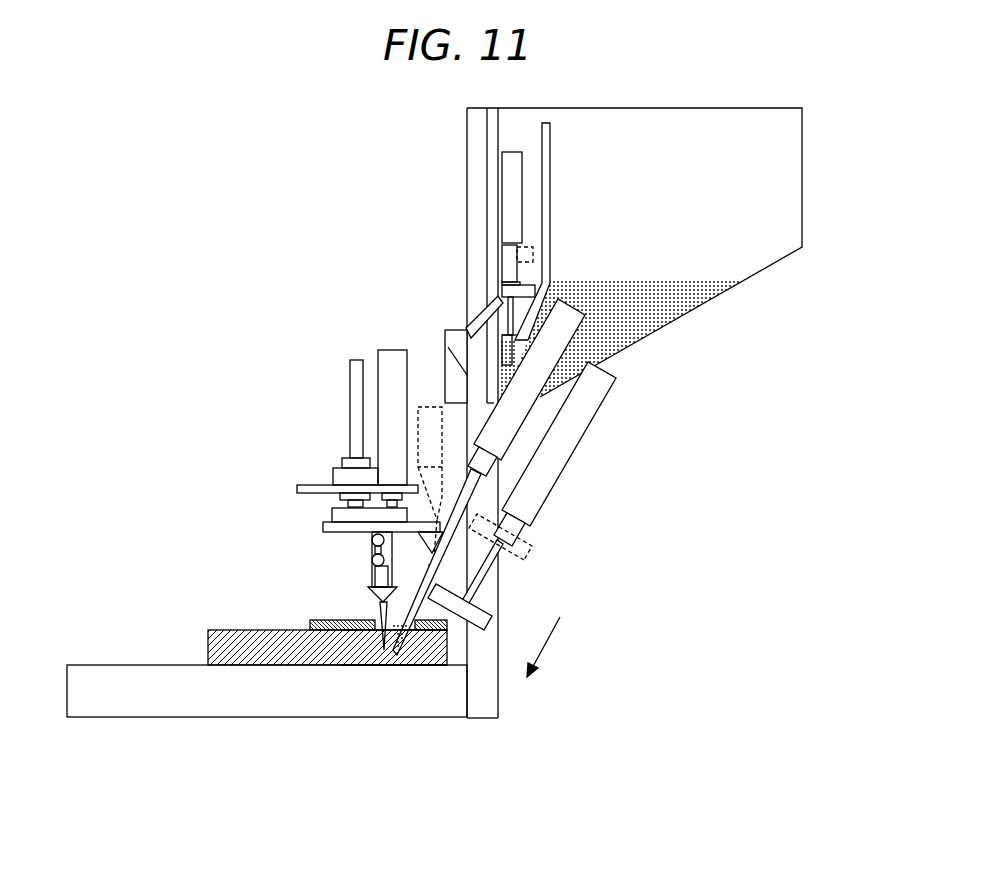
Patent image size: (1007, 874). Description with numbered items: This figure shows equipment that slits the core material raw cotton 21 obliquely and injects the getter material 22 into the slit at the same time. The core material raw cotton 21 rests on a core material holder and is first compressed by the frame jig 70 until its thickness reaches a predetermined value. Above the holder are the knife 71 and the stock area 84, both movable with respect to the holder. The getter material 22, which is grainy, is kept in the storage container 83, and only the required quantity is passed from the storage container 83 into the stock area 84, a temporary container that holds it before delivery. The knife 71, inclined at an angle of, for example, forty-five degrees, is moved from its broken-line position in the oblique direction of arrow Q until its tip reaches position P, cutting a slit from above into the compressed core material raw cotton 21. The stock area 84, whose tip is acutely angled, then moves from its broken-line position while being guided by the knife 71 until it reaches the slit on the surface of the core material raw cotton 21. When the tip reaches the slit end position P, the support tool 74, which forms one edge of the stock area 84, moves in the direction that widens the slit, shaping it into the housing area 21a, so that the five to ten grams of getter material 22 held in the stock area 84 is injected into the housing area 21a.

The storage container 83 is at (768, 272).
The getter material 22 is at (655, 335).
The stock area 84 is at (413, 573).
The knife 71 is at (447, 650).
The support tool 74 is at (372, 612).
The frame jig 70 is at (325, 620).
The core material raw cotton 21 is at (207, 652).
The housing area 21a is at (362, 652).
The slit end position P is at (396, 662).
The arrow direction Q is at (550, 647).